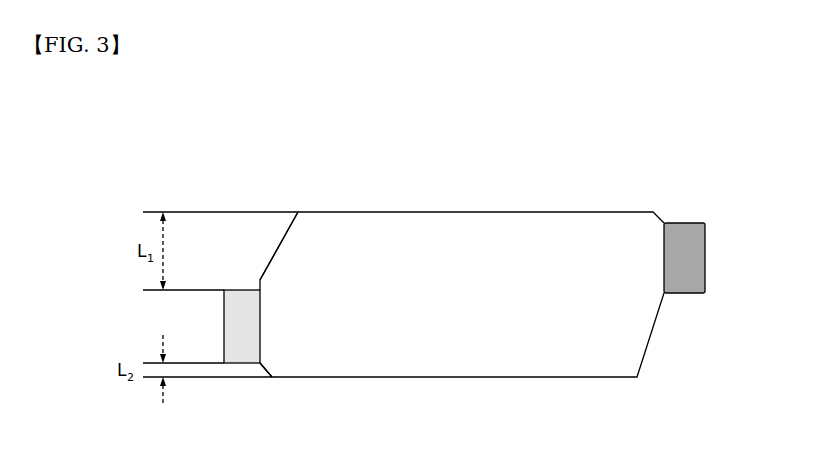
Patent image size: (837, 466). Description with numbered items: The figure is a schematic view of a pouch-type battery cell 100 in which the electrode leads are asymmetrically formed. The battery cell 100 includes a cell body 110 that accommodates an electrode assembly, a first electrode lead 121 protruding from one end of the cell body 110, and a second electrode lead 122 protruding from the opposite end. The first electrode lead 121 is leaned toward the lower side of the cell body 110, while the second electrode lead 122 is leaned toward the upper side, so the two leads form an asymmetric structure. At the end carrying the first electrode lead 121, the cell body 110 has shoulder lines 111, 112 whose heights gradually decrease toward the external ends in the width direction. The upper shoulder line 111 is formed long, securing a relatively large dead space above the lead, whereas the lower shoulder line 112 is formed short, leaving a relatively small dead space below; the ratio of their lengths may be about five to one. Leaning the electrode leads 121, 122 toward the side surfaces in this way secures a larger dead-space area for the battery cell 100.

The battery cell 100 is at (135, 123).
The cell body 110 is at (463, 211).
The shoulder line 111 is at (280, 240).
The shoulder line 112 is at (264, 370).
The first electrode lead 121 is at (223, 317).
The second electrode lead 122 is at (705, 255).